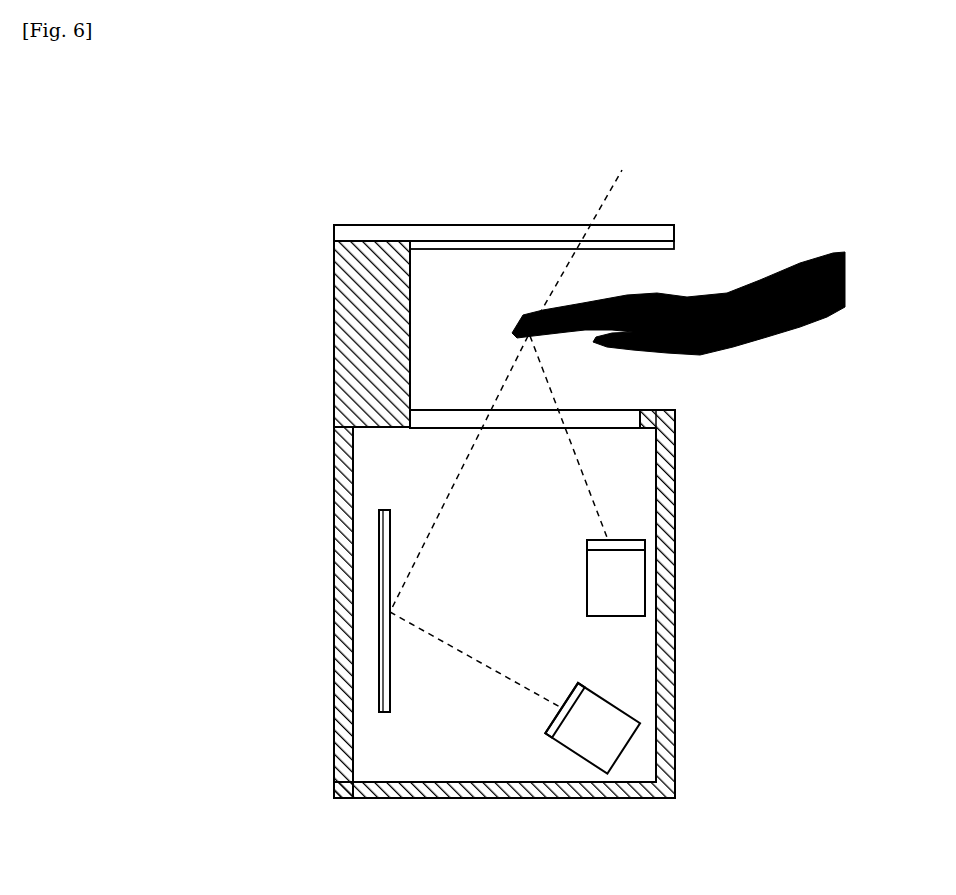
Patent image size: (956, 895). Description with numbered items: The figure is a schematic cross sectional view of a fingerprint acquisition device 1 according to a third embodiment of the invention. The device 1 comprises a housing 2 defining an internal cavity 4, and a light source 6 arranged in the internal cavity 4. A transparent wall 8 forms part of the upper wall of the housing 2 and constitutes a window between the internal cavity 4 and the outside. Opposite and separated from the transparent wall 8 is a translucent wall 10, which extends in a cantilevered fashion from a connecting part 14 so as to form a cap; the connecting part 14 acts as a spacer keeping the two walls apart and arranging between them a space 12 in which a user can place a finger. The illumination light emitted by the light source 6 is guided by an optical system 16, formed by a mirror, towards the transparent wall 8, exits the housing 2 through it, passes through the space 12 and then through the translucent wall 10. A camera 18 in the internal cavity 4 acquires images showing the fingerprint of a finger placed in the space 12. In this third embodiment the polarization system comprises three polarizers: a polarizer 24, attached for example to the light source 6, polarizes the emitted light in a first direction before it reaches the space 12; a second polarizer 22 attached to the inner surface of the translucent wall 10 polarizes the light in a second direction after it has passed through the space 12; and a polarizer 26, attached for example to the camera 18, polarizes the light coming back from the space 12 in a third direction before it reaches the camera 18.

The fingerprint acquisition device 1 is at (170, 162).
The housing 2 is at (333, 491).
The internal cavity 4 is at (492, 609).
The light source 6 is at (633, 743).
The transparent wall 8 is at (587, 409).
The translucent wall 10 is at (453, 225).
The space 12 is at (452, 342).
The connecting part 14 is at (333, 331).
The optical system 16 is at (379, 651).
The camera 18 is at (645, 582).
The second polarizer 22 is at (675, 245).
The polarizer 24 is at (547, 738).
The polarizer 26 is at (645, 545).